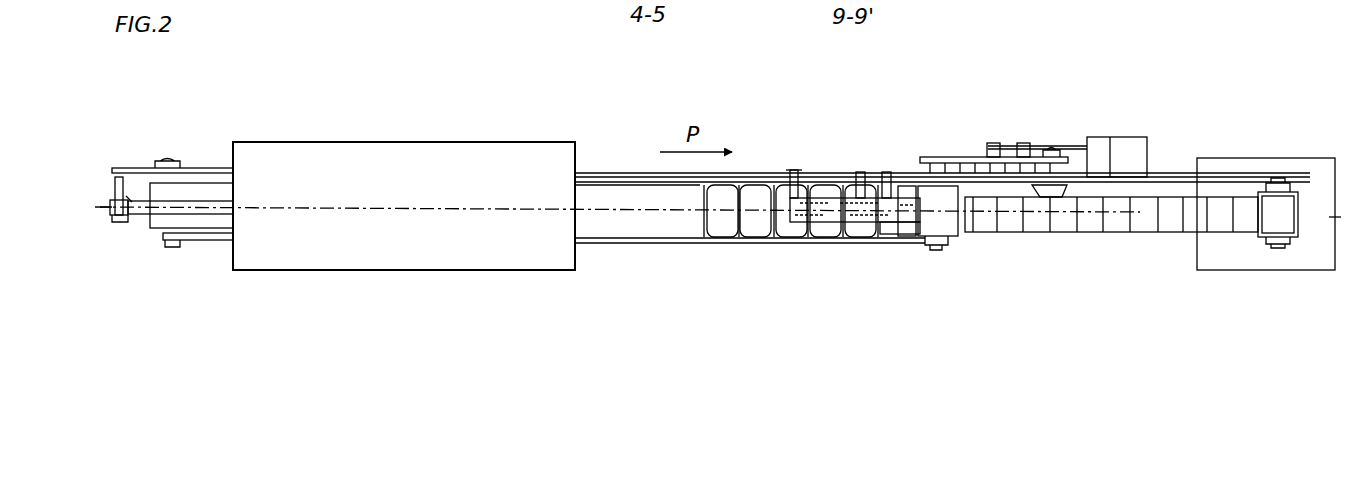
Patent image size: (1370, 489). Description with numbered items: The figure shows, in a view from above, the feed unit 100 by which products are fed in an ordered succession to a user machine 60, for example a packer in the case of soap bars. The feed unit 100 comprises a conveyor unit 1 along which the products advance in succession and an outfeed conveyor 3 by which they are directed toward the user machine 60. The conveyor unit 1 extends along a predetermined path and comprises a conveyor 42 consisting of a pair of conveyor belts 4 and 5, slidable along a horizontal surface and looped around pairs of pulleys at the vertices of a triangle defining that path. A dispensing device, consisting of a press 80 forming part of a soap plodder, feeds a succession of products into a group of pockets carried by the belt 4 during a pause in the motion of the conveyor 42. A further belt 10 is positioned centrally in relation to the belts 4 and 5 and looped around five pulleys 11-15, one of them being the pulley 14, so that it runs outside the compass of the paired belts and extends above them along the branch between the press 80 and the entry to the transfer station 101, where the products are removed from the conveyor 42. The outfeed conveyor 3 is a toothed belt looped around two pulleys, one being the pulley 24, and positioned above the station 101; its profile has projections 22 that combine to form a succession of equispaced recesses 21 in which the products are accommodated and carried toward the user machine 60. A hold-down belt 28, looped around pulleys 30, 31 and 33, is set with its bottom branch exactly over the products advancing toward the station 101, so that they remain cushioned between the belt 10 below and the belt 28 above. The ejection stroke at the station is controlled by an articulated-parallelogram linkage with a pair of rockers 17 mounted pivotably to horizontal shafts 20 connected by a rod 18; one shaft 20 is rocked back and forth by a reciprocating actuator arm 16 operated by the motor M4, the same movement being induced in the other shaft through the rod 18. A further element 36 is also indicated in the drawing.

The conveyor unit 1 is at (642, 245).
The outfeed conveyor 3 is at (1110, 246).
The conveyor belt 4 is at (222, 190).
The conveyor belt 5 is at (218, 224).
The belt 10 is at (116, 218).
The pulleys 11-15 is at (138, 195).
The pulley 14 is at (931, 0).
The reciprocating actuator arm 16 is at (1050, 140).
The rockers 17 is at (987, 150).
The rod 18 is at (1003, 140).
The horizontal shafts 20 is at (985, 0).
The recesses 21 is at (1198, 210).
The projections 22 is at (1168, 220).
The pulley 24 is at (1290, 240).
The hold-down belt 28 is at (797, 182).
The pulley 30 is at (785, 223).
The pulley 31 is at (845, 235).
The pulley 33 is at (890, 238).
The section element 36 is at (1038, 0).
The conveyor 42 is at (635, 180).
The user machine 60 is at (1323, 172).
The press 80 is at (400, 192).
The feed unit 100 is at (593, 163).
The transfer station 101 is at (977, 243).
The motor M4 is at (1115, 137).